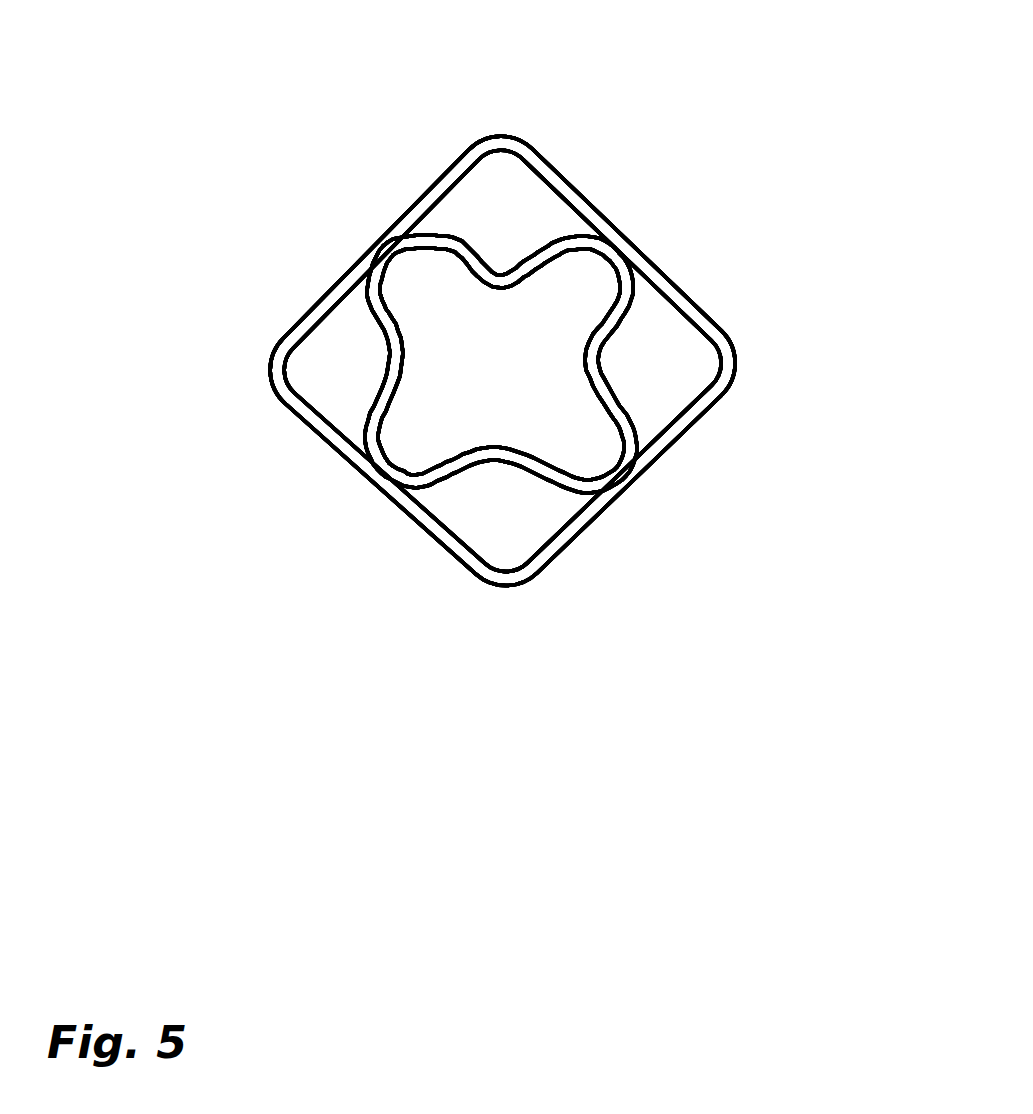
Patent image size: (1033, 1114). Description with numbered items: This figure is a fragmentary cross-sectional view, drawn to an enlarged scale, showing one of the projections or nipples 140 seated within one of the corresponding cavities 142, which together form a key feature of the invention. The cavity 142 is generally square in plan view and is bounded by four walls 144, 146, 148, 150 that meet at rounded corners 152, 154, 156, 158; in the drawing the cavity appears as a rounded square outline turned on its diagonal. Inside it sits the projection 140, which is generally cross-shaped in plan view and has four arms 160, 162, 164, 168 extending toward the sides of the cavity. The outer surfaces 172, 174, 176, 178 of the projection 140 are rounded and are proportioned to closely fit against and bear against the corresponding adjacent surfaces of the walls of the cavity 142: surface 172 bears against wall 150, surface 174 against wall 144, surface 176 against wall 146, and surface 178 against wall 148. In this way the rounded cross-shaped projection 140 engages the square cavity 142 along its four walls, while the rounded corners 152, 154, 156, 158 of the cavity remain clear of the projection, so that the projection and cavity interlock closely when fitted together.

The projection 140 is at (617, 345).
The cavity 142 is at (585, 541).
The wall 144 is at (675, 448).
The wall 146 is at (583, 194).
The wall 148 is at (327, 292).
The wall 150 is at (308, 423).
The rounded corner 152 is at (507, 585).
The rounded corner 154 is at (733, 367).
The rounded corner 156 is at (502, 137).
The rounded corner 158 is at (272, 363).
The arm 160 is at (476, 478).
The arm 162 is at (623, 400).
The arm 164 is at (627, 308).
The arm 168 is at (455, 245).
The surface 172 is at (373, 465).
The surface 174 is at (630, 484).
The surface 176 is at (623, 251).
The surface 178 is at (402, 250).